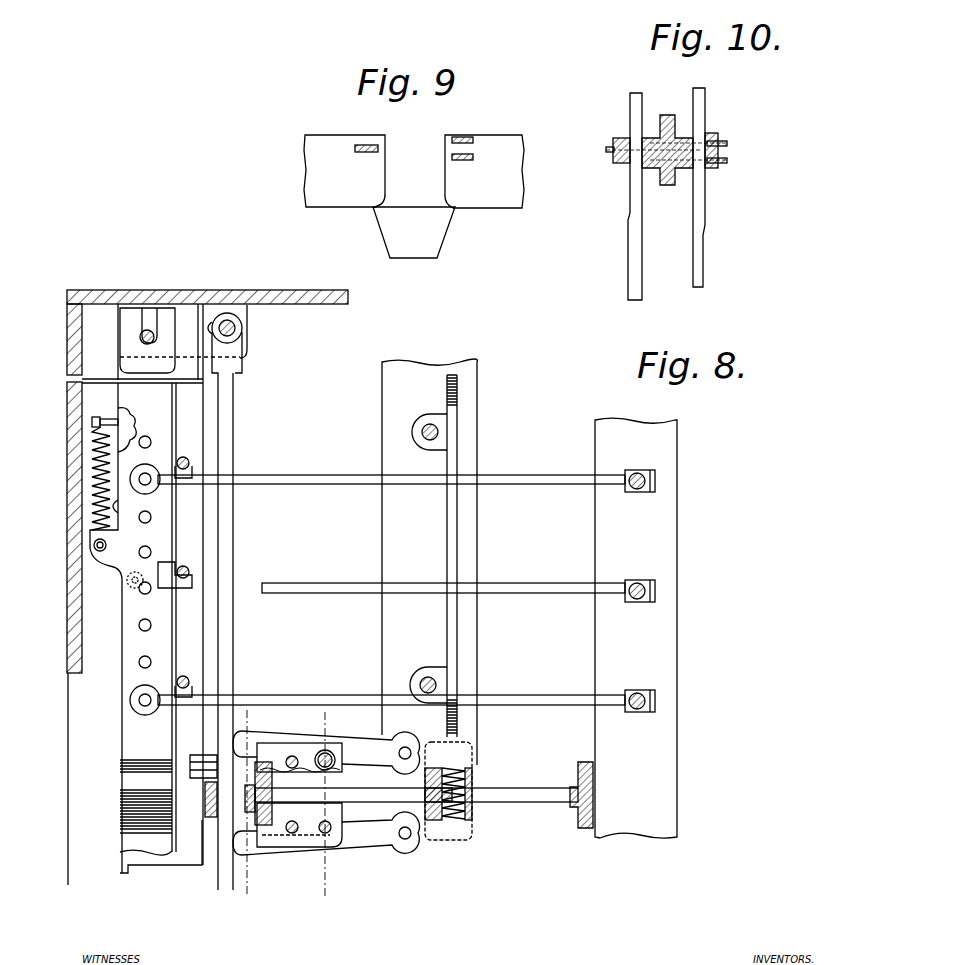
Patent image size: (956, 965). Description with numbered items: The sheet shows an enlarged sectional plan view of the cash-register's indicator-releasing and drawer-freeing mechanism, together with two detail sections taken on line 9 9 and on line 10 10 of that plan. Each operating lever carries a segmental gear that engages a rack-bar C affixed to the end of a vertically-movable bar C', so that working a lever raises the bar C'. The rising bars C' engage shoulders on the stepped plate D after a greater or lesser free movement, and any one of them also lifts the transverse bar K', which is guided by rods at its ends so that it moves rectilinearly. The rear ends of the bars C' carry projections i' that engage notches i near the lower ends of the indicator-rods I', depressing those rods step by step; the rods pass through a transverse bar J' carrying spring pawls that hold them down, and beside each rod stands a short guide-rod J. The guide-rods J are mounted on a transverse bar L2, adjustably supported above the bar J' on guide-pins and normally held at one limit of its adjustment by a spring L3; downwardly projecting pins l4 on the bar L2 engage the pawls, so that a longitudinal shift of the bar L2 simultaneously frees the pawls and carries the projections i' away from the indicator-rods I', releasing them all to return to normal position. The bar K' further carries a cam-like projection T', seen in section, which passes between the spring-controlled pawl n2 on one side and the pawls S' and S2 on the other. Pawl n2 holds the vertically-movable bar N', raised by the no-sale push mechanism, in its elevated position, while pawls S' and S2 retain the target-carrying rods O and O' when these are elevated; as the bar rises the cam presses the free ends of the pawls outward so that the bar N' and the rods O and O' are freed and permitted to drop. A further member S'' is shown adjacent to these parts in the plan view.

In FIG. 9, the transverse bar K' is at (414, 171).
In FIG. 8, the transverse bar K' is at (238, 597).
In FIG. 9, the projection / block T' is at (414, 232).
In FIG. 8, the projection / block T' is at (299, 739).
In FIG. 9, the spring-controlled pawl n2 is at (352, 148).
In FIG. 10, the spring-controlled pawl n2 is at (606, 151).
In FIG. 8, the spring-controlled pawl n2 is at (365, 848).
In FIG. 9, the pawl S' is at (477, 146).
In FIG. 10, the pawl S' is at (701, 143).
In FIG. 9, the pawl S2 is at (468, 161).
In FIG. 10, the pawl S2 is at (727, 161).
In FIG. 10, the vertically-movable bar N' is at (646, 196).
In FIG. 8, the vertically-movable bar N' is at (299, 846).
In FIG. 10, the vertically-movable rod O is at (711, 187).
In FIG. 8, the vertically-movable rod O is at (339, 766).
In FIG. 8, the vertically-movable rod O' is at (299, 742).
In FIG. 8, the arm S'' is at (326, 742).
In FIG. 8, the notch i is at (147, 340).
In FIG. 8, the indicator-rod I' is at (175, 560).
In FIG. 8, the projection i' is at (184, 606).
In FIG. 8, the guide-rod J is at (135, 590).
In FIG. 8, the transverse bar J' is at (184, 615).
In FIG. 8, the transverse bar L2 is at (125, 610).
In FIG. 8, the spring L3 is at (120, 513).
In FIG. 8, the pin l4 is at (158, 565).
In FIG. 8, the vertically-movable bar C' is at (377, 589).
In FIG. 8, the rack-bar C is at (636, 628).
In FIG. 8, the stepped plate D is at (450, 538).
In FIG. 8, the section line 9 is at (244, 809).
In FIG. 8, the section line 10 is at (327, 808).